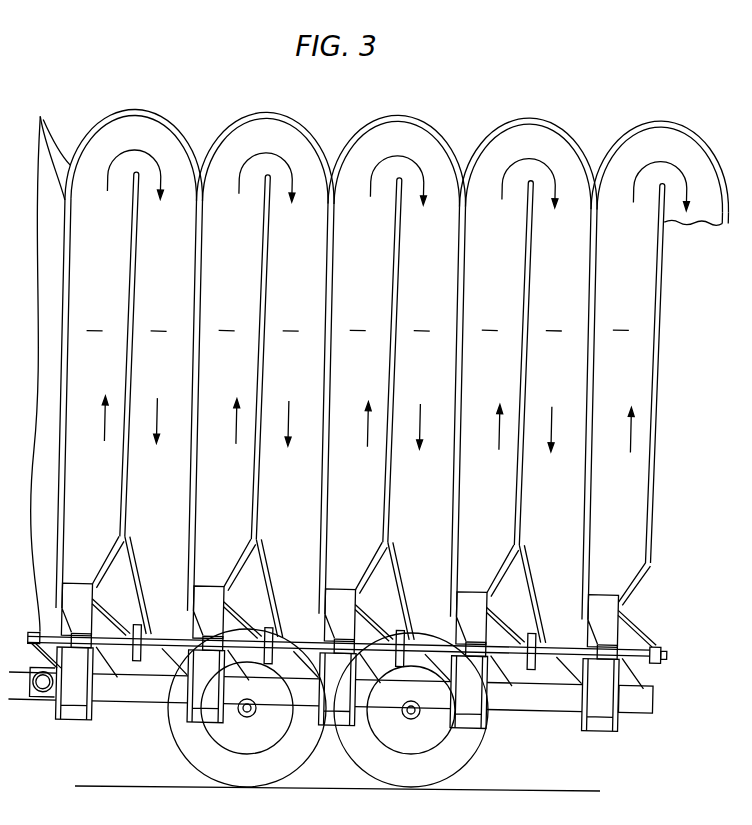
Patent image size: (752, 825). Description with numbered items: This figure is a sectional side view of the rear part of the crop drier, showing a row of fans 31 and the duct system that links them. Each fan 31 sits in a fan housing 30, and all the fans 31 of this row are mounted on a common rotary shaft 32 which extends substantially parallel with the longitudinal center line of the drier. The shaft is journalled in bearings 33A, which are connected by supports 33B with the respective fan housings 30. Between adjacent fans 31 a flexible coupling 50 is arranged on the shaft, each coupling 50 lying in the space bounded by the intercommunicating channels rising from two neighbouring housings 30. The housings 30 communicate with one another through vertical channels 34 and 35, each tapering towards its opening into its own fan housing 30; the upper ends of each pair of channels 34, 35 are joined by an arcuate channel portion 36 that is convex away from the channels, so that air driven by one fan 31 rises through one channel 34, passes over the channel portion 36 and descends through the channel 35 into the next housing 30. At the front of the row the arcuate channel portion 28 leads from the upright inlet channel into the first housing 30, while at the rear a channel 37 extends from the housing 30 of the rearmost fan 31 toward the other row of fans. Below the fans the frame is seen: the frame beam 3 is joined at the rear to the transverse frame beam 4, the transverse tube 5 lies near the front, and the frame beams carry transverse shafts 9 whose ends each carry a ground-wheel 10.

The frame beam 3 is at (546, 700).
The frame beam 4 is at (660, 702).
The tube 5 is at (46, 697).
The shaft 9 is at (329, 719).
The ground-wheel 10 is at (326, 708).
The channel portion 28 is at (52, 131).
The fan housing 30 is at (340, 711).
The fan 31 is at (342, 597).
The rotary shaft 32 is at (54, 632).
The bearing 33A is at (136, 628).
The support 33B is at (124, 663).
The vertical channel 34 is at (347, 409).
The vertical channel 35 is at (390, 397).
The channel portion 36 is at (170, 128).
The channel 37 is at (697, 212).
The flexible coupling 50 is at (407, 622).